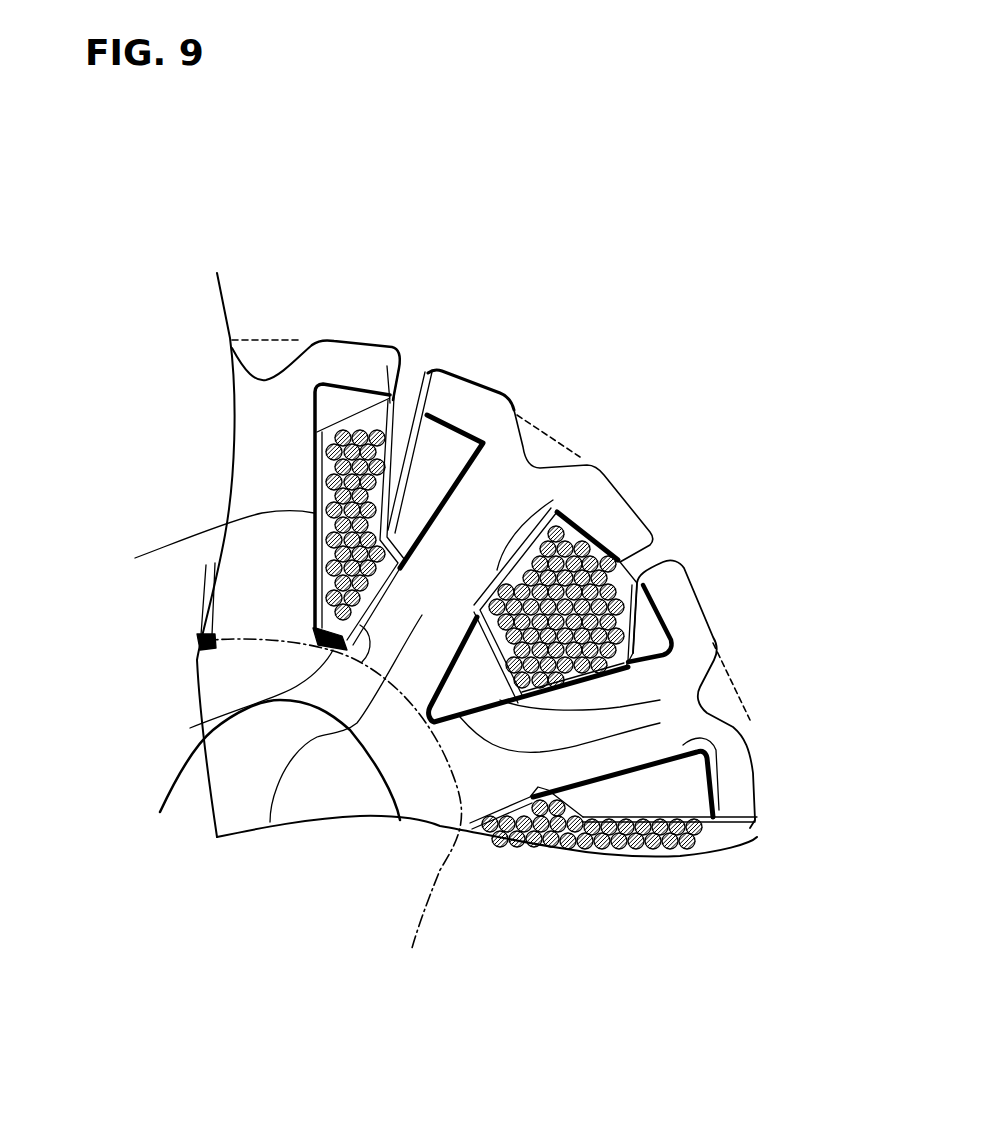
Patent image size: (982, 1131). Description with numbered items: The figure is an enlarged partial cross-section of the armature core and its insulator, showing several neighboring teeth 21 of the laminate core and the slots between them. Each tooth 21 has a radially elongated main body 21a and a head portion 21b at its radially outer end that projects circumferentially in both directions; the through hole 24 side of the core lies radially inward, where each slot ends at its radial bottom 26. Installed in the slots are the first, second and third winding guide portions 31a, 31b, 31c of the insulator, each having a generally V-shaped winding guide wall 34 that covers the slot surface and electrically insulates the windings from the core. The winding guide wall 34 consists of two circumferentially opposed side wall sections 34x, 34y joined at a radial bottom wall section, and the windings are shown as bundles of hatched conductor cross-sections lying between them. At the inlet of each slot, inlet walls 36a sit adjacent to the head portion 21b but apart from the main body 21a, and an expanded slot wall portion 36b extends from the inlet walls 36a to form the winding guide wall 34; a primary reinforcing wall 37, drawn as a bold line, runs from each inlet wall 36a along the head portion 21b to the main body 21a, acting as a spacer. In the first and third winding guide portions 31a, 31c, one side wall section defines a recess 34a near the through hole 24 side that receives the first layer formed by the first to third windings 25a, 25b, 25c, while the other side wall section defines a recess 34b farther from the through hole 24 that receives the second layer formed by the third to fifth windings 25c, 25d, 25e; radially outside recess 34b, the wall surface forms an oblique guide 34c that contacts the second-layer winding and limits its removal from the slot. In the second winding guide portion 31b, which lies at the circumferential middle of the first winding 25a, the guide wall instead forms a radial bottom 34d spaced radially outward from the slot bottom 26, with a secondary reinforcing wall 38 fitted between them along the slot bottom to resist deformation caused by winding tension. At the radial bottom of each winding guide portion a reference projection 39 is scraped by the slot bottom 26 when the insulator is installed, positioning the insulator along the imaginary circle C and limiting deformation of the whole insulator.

The tooth 21 is at (290, 360).
The main body 21a is at (248, 440).
The head portion 21b is at (332, 345).
The through hole 24 is at (333, 825).
The first winding 25a is at (314, 610).
The second winding 25b is at (667, 598).
The third winding 25c is at (650, 860).
The fourth winding 25d is at (206, 541).
The fifth winding 25e is at (553, 500).
The radial bottom of the slot 26 is at (337, 647).
The first winding guide portion 31a is at (314, 573).
The second winding guide portion 31b is at (610, 575).
The third winding guide portion 31c is at (550, 853).
The winding guide wall 34 is at (400, 465).
The recess 34a is at (160, 812).
The recess 34b is at (314, 490).
The guide 34c is at (393, 400).
The radial bottom 34d is at (600, 728).
The side wall section 34x is at (314, 530).
The side wall section 34y is at (455, 480).
The inlet wall 36a is at (432, 368).
The expanded slot wall portion 36b is at (600, 713).
The primary reinforcing wall 37 is at (352, 382).
The secondary reinforcing wall 38 is at (600, 738).
The reference projection 39 is at (335, 640).
The imaginary circle C is at (331, 809).